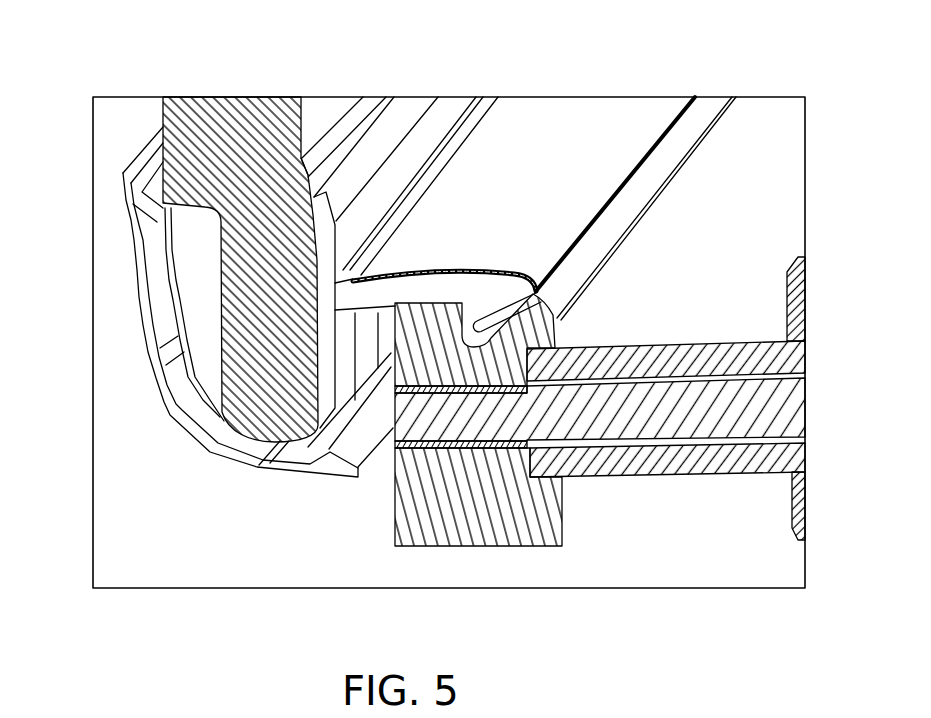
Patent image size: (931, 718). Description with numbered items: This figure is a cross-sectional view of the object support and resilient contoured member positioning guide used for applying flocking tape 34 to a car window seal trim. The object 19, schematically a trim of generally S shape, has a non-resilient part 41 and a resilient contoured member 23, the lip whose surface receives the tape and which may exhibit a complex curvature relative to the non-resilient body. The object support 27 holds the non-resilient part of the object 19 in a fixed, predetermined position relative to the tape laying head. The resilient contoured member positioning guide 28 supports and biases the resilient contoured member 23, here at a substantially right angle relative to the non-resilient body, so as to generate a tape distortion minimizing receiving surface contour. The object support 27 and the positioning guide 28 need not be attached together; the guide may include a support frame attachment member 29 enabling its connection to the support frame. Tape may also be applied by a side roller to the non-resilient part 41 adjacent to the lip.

The object 19 is at (223, 358).
The resilient contoured member 23 is at (490, 285).
The object support 27 is at (197, 162).
The resilient contoured member positioning guide 28 is at (556, 318).
The support frame attachment member 29 is at (693, 420).
The flocking tape 34 is at (463, 270).
The non-resilient part 41 is at (420, 143).